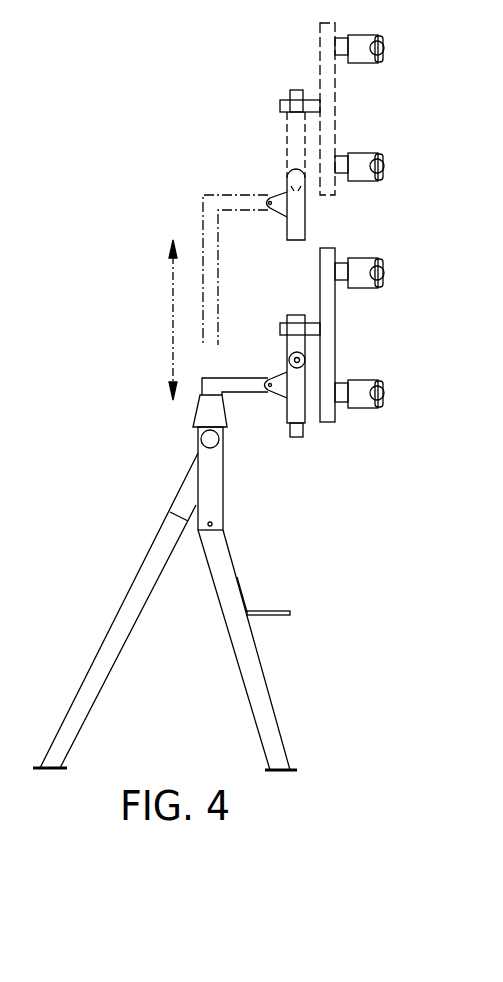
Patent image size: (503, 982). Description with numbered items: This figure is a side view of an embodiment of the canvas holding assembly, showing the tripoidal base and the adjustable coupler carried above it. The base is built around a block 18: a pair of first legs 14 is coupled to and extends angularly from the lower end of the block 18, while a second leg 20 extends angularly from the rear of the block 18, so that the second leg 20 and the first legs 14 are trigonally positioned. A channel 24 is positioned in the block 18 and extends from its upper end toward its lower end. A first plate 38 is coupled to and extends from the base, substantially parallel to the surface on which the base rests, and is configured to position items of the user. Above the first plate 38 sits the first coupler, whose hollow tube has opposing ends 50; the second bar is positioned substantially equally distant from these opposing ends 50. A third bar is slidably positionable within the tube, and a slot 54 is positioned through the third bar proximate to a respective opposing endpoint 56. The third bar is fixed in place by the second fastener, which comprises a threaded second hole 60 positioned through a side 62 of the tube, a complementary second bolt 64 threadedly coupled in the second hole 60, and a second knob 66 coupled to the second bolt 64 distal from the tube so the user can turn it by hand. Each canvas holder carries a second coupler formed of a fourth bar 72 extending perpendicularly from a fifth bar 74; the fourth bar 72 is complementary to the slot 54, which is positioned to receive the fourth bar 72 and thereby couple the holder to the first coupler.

The first legs 14 is at (263, 724).
The block 18 is at (213, 477).
The second leg 20 is at (83, 703).
The channel 24 is at (209, 420).
The first plate 38 is at (288, 612).
The opposing ends 50 is at (300, 422).
The slot 54 is at (293, 110).
The opposing endpoint 56 is at (298, 435).
The second hole 60 is at (292, 354).
The side 62 is at (300, 408).
The second bolt 64 is at (293, 358).
The second knob 66 is at (293, 362).
The fourth bar 72 is at (280, 105).
The fifth bar 74 is at (325, 60).